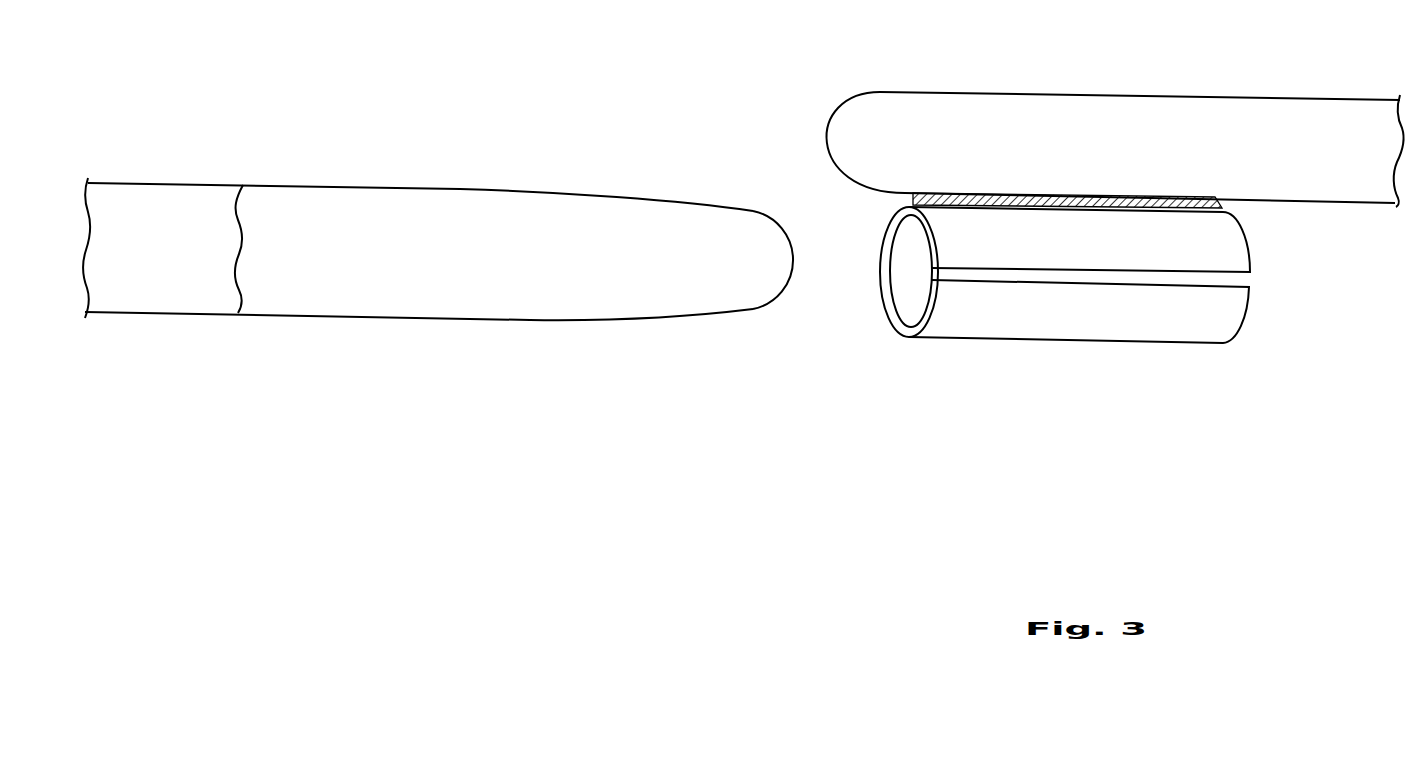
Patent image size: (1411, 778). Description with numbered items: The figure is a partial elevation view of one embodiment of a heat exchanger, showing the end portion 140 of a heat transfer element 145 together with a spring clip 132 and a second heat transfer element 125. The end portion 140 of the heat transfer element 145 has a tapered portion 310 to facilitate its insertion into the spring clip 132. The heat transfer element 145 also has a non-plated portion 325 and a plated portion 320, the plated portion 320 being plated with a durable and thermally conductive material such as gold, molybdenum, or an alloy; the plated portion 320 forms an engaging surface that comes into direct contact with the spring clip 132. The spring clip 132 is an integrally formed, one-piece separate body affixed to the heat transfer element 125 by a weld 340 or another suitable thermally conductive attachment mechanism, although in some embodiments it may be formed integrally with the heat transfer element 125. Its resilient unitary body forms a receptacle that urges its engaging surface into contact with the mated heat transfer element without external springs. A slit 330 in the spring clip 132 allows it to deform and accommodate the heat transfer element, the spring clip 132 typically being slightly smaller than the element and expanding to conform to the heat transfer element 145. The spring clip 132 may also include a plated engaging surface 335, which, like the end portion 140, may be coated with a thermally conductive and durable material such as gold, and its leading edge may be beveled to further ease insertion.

The heat transfer element 125 is at (972, 95).
The spring clip 132 is at (1033, 345).
The end portion 140 is at (433, 328).
The heat transfer element 145 is at (175, 173).
The tapered portion 310 is at (712, 330).
The plated portion 320 is at (440, 205).
The non-plated portion 325 is at (215, 200).
The slit 330 is at (1240, 278).
The engaging surface 335 is at (908, 286).
The weld 340 is at (913, 203).